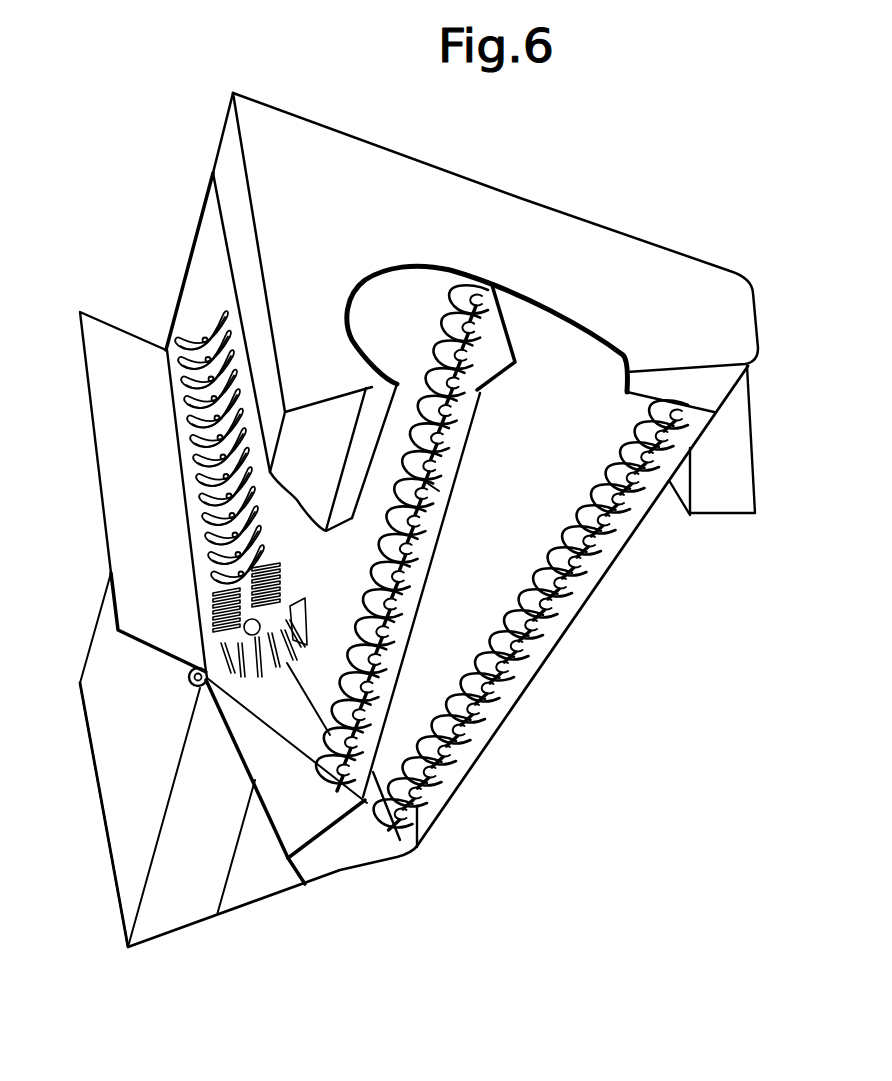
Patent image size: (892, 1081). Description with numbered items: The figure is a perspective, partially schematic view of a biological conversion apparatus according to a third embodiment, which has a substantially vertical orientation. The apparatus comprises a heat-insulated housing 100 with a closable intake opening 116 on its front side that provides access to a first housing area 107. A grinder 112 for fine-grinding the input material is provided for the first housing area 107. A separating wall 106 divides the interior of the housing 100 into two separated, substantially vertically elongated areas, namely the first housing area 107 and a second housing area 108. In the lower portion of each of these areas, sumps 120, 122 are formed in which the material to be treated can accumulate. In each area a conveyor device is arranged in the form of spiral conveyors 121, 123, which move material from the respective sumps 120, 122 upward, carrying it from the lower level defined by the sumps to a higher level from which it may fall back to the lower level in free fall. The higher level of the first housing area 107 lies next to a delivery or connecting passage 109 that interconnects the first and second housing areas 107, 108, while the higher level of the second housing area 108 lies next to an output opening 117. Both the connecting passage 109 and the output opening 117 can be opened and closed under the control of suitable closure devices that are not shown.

The heat-insulated housing 100 is at (297, 104).
The separating wall 106 is at (433, 557).
The first housing area 107 is at (412, 292).
The second housing area 108 is at (574, 338).
The connecting passage 109 is at (500, 383).
The grinder 112 is at (204, 484).
The intake opening 116 is at (204, 251).
The output opening 117 is at (713, 517).
The sump 120 is at (261, 700).
The spiral conveyor 121 is at (433, 488).
The sump 122 is at (332, 853).
The spiral conveyor 123 is at (564, 600).